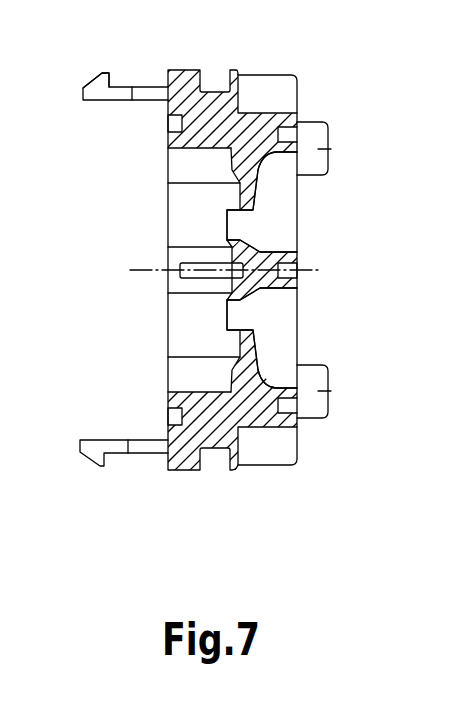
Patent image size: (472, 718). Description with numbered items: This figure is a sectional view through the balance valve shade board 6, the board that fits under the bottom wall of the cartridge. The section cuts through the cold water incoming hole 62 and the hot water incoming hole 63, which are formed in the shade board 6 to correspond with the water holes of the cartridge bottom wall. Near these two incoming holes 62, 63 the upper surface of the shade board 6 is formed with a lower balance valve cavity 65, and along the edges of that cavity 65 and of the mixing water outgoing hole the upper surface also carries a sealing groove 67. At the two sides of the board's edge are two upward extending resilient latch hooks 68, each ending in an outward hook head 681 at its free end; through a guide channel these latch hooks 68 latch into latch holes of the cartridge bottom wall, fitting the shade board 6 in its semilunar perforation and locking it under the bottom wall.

The balance valve shade board 6 is at (250, 63).
The cold water incoming hole 62 is at (288, 326).
The hot water incoming hole 63 is at (280, 217).
The lower balance valve cavity 65 is at (183, 208).
The sealing groove 67 is at (168, 133).
The resilient latch hook 68 is at (120, 95).
The hook head 681 is at (97, 83).